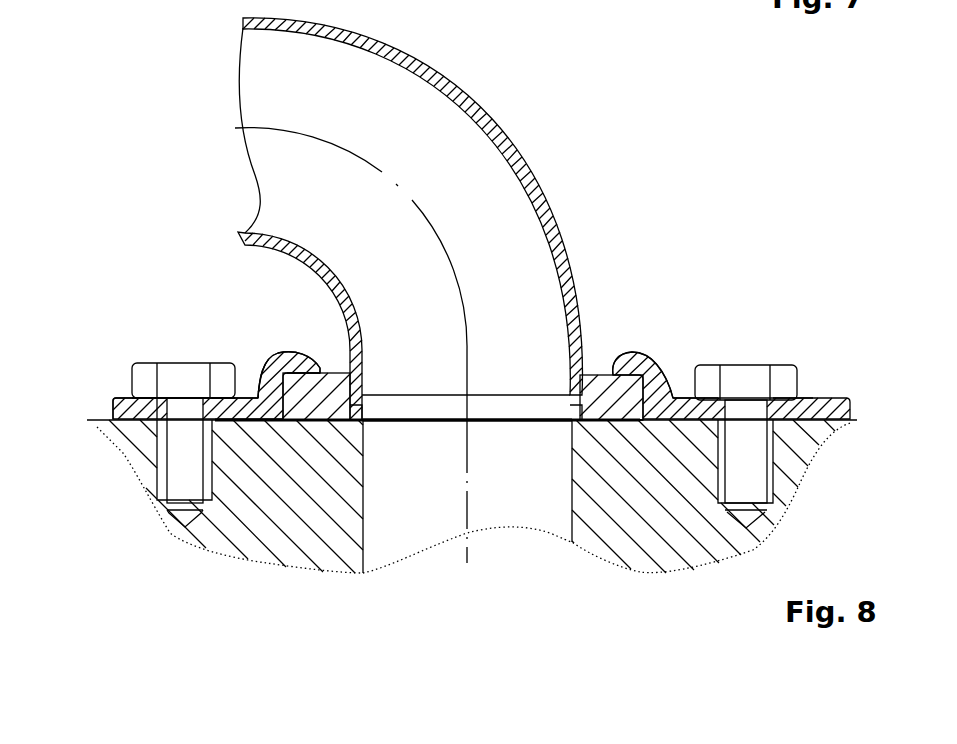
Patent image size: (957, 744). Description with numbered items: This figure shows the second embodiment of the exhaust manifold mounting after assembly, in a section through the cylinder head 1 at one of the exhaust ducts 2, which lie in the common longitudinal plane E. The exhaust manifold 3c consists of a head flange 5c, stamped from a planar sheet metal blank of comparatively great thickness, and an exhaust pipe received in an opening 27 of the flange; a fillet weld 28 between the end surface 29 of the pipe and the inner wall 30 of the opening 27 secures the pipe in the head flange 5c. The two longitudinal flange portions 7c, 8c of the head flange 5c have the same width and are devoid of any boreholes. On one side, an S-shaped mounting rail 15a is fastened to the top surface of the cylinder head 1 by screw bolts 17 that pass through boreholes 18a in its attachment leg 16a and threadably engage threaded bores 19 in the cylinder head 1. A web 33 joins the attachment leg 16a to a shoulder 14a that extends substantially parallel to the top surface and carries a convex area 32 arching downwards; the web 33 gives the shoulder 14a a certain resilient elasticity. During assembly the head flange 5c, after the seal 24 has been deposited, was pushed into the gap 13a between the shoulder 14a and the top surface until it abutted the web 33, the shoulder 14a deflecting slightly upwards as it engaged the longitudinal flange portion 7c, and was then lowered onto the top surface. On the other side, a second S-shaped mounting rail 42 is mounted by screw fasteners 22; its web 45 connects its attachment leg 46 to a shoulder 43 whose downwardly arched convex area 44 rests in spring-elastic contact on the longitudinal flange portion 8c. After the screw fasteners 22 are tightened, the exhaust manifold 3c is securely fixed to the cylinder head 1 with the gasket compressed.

The cylinder head 1 is at (242, 527).
The exhaust duct 2 is at (403, 537).
The exhaust manifold 3c is at (537, 130).
The head flange 5c is at (596, 368).
The longitudinal flange portion 7c is at (332, 420).
The longitudinal flange portion 8c is at (455, 88).
The gap 13a is at (273, 420).
The shoulder 14a is at (293, 362).
The mounting rail 15a is at (216, 389).
The attachment leg 16a is at (125, 410).
The screw bolt 17 is at (167, 366).
The borehole 18a is at (160, 400).
The threaded bore 19 is at (180, 517).
The screw fastener 22 is at (736, 358).
The seal 24 is at (417, 433).
The opening 27 is at (493, 420).
The fillet weld 28 is at (365, 400).
The end surface 29 is at (576, 398).
The inner wall 30 is at (572, 422).
The convex area 32 is at (297, 420).
The web 33 is at (262, 390).
The mounting rail 42 is at (787, 390).
The shoulder 43 is at (627, 355).
The convex area 44 is at (605, 422).
The web 45 is at (670, 385).
The attachment leg 46 is at (805, 403).
The longitudinal plane E is at (467, 487).